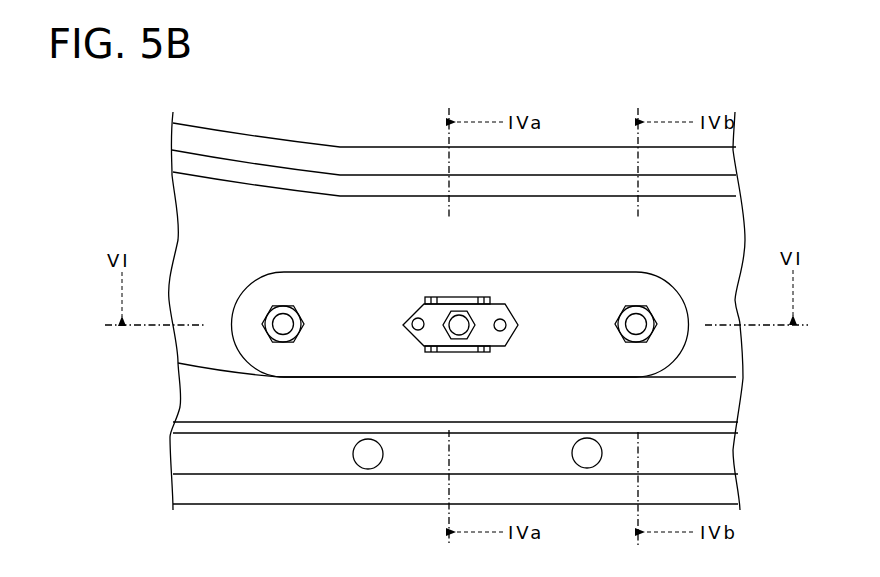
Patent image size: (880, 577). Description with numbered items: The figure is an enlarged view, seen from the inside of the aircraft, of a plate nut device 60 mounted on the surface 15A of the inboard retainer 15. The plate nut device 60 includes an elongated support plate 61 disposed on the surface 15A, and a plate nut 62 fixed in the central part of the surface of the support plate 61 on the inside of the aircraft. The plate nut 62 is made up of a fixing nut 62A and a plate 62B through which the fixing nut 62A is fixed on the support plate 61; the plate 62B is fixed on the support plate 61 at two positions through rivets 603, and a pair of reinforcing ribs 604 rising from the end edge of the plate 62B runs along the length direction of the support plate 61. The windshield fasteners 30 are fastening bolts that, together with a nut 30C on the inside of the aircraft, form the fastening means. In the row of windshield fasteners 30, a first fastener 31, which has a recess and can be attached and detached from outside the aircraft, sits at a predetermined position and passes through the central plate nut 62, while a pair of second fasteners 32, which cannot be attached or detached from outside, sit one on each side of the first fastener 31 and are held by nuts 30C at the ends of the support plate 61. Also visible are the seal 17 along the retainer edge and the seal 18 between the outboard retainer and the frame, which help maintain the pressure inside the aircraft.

The inboard retainer 15 is at (726, 204).
The surface of the inboard retainer 15A is at (735, 239).
The seal 17 is at (263, 136).
The seal 18 is at (249, 470).
The windshield fastener 30 is at (456, 327).
The first fastener 31 is at (428, 347).
The second fastener 32 is at (277, 328).
The nut 30C is at (268, 304).
The plate nut device 60 is at (388, 230).
The support plate 61 is at (313, 286).
The plate nut 62 is at (413, 307).
The fixing nut 62A is at (465, 298).
The plate 62B is at (503, 305).
The rivet 603 is at (410, 327).
The reinforcing rib 604 is at (442, 298).